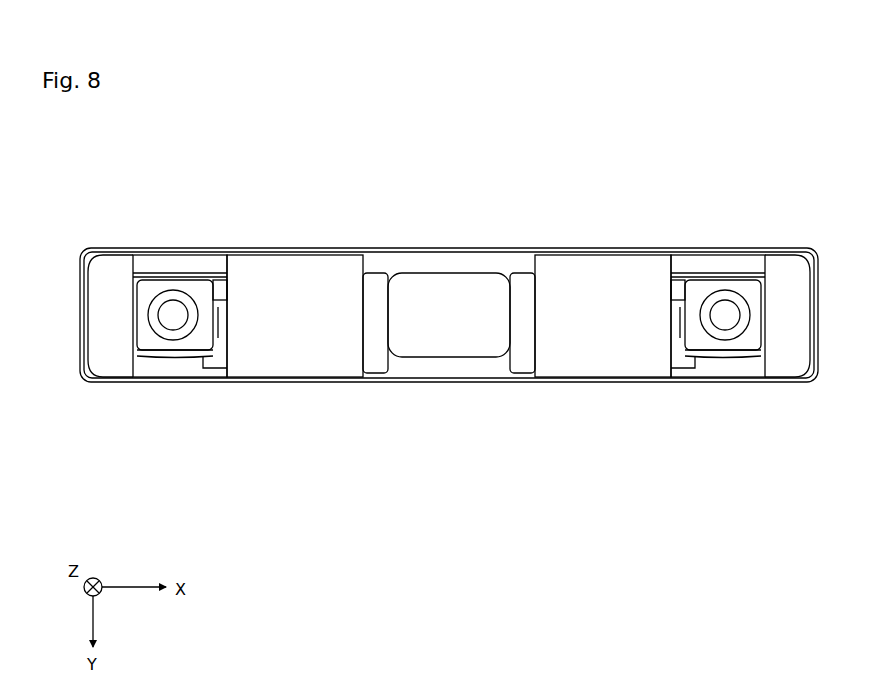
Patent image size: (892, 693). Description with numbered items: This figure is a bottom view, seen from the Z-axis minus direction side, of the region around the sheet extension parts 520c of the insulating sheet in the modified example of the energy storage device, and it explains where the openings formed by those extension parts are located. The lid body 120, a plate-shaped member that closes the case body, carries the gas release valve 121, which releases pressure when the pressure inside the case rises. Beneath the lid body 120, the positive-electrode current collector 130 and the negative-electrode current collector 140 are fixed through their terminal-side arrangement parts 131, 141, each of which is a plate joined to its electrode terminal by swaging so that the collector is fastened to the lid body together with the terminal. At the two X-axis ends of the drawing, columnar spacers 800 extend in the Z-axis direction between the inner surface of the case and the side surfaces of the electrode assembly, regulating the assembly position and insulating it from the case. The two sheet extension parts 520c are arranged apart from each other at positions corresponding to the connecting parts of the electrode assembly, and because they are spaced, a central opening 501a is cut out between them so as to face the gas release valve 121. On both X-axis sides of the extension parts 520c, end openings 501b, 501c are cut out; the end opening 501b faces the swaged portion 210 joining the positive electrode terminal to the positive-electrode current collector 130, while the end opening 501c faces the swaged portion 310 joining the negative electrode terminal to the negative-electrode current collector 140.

The spacer 800 is at (94, 262).
The lid body 120 is at (519, 250).
The gas release valve 121 is at (448, 273).
The positive-electrode current collector 130 is at (188, 279).
The terminal-side arrangement part 131 is at (197, 282).
The negative-electrode current collector 140 is at (706, 279).
The terminal-side arrangement part 141 is at (701, 282).
The swaged portion 210 is at (158, 292).
The swaged portion 310 is at (740, 292).
The sheet extension part 520c is at (290, 267).
The central opening 501a is at (449, 364).
The end opening 501b is at (169, 366).
The end opening 501c is at (729, 364).